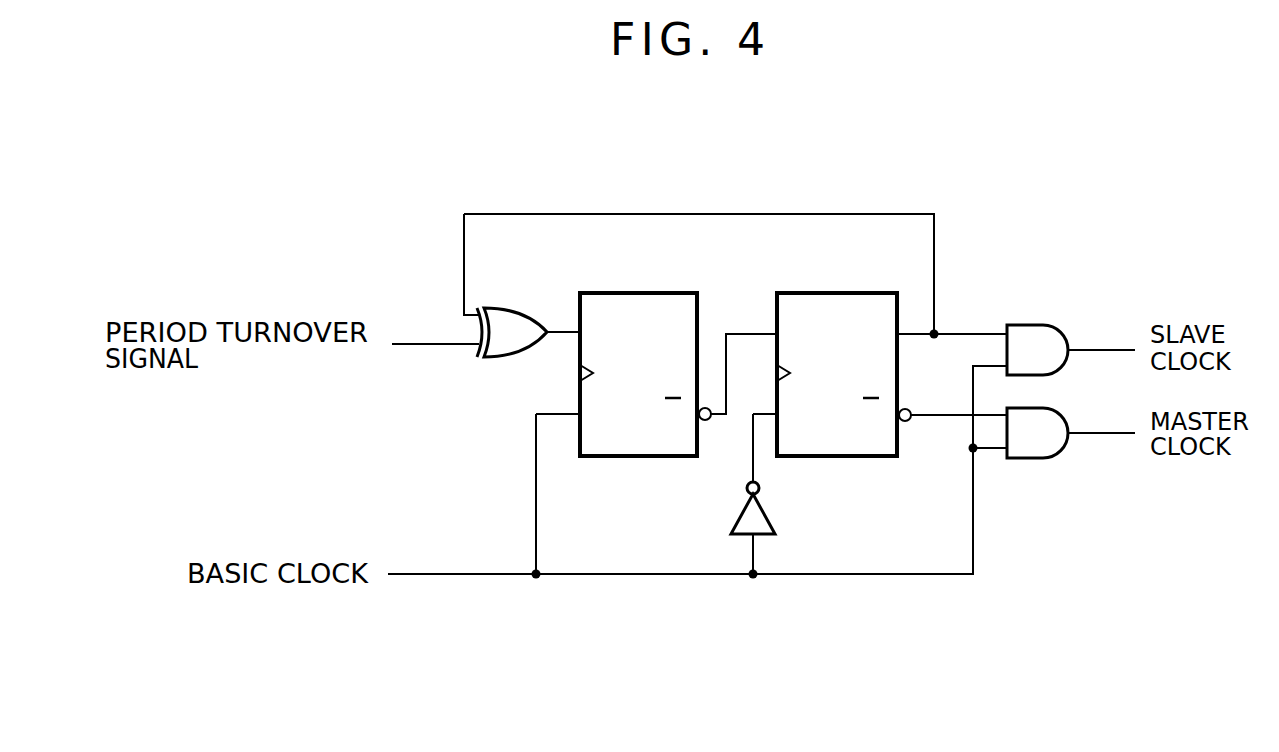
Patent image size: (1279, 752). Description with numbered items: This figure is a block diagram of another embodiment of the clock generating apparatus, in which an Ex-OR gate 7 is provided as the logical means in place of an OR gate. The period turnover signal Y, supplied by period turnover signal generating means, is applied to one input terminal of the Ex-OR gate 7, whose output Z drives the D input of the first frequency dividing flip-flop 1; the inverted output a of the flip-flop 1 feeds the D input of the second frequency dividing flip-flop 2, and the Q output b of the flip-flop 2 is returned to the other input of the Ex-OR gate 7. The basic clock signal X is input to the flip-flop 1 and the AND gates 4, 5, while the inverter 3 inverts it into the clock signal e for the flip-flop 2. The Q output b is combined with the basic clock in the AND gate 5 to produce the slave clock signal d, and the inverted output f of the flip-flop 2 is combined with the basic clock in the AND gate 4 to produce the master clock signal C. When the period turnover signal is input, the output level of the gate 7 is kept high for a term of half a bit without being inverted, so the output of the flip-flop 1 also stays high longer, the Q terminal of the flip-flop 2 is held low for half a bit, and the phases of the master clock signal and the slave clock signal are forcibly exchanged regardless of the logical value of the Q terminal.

The frequency dividing flip-flop 1 is at (645, 461).
The frequency dividing flip-flop 2 is at (868, 458).
The inverter 3 is at (773, 518).
The AND gate 4 is at (1060, 408).
The AND gate 5 is at (1040, 323).
The Ex-OR gate 7 is at (520, 307).
The signal a (first flip-flop inverted output) a is at (740, 333).
The signal b (second flip-flop output) b is at (939, 299).
The slave clock signal d is at (1097, 349).
The inverted clock signal e is at (752, 461).
The signal f (second flip-flop inverted output) f is at (938, 413).
The basic clock signal X is at (465, 573).
The period turnover signal Y is at (441, 347).
The exclusive-OR output signal Z is at (545, 336).
The master clock signal C is at (1092, 436).